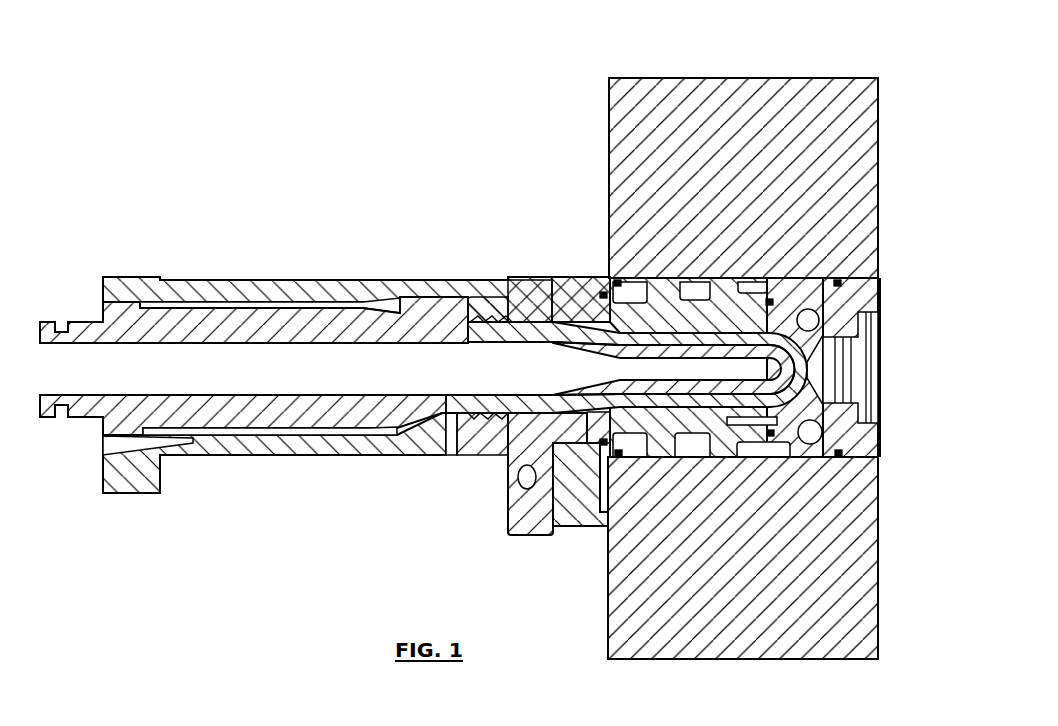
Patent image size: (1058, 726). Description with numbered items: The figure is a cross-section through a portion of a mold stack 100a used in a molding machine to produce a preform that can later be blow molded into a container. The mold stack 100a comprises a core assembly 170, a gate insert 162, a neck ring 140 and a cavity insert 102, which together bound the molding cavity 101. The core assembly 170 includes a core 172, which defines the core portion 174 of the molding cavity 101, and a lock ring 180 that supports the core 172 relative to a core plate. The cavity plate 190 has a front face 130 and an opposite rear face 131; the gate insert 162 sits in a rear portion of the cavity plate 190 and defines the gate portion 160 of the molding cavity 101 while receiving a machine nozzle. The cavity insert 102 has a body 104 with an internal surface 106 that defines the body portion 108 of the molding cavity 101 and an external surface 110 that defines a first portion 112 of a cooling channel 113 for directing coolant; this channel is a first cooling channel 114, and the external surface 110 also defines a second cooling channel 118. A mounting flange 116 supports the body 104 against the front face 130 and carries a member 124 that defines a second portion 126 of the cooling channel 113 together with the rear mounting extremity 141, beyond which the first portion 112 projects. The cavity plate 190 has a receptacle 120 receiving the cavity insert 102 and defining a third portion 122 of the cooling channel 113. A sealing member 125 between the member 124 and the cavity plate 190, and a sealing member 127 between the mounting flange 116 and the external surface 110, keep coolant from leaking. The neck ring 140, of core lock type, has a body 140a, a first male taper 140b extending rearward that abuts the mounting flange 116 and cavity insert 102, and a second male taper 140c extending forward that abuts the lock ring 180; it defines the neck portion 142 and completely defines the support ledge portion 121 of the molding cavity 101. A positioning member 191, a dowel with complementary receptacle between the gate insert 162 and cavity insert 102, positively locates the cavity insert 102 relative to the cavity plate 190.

The mold stack 100a is at (143, 171).
The molding cavity 101 is at (765, 450).
The cavity insert 102 is at (572, 290).
The body 104 is at (680, 50).
The internal surface 106 is at (665, 278).
The body portion 108 is at (688, 323).
The external surface 110 is at (636, 280).
The first portion 112 is at (643, 446).
The cooling channel 113 is at (637, 453).
The first cooling channel 114 is at (645, 278).
The mounting flange 116 is at (600, 278).
The second cooling channel 118 is at (693, 447).
The receptacle 120 is at (858, 463).
The support ledge portion 121 is at (556, 445).
The third portion 122 is at (765, 290).
The member 124 is at (630, 460).
The sealing member 125 is at (575, 495).
The second portion 126 is at (630, 395).
The sealing member 127 is at (585, 500).
The front face 130 is at (608, 640).
The rear face 131 is at (878, 160).
The neck ring 140 is at (508, 522).
The body 140a is at (520, 300).
The first male taper 140b is at (560, 290).
The second male taper 140c is at (488, 298).
The rear mounting extremity 141 is at (603, 278).
The neck portion 142 is at (487, 420).
The gate portion 160 is at (808, 308).
The gate insert 162 is at (865, 292).
The core assembly 170 is at (233, 524).
The core 172 is at (302, 415).
The core portion 174 is at (716, 340).
The lock ring 180 is at (250, 447).
The cavity plate 190 is at (866, 110).
The positioning member 191 is at (858, 432).